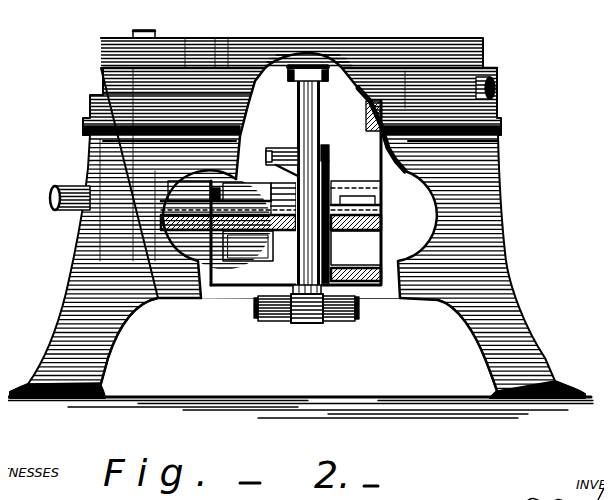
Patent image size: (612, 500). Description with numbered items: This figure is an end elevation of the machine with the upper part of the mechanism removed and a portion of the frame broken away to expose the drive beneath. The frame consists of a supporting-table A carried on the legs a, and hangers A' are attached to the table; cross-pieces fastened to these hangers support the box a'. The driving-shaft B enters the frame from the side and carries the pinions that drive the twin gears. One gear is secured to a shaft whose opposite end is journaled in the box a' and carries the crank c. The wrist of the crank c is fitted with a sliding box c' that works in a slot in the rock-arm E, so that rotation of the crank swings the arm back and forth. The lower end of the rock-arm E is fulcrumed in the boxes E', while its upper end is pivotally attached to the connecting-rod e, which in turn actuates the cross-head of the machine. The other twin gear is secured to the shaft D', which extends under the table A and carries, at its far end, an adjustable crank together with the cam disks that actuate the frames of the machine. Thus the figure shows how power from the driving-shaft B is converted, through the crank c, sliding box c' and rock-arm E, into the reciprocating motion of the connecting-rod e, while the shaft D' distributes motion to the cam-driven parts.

The supporting-table A is at (306, 49).
The legs a is at (306, 268).
The hangers A' is at (199, 234).
The box a' is at (228, 233).
The driving-shaft B is at (43, 190).
The shaft D' is at (368, 181).
The rock-arm E is at (348, 248).
The boxes E' is at (306, 321).
The connecting-rod e is at (302, 57).
The crank c is at (282, 154).
The sliding box c' is at (337, 146).